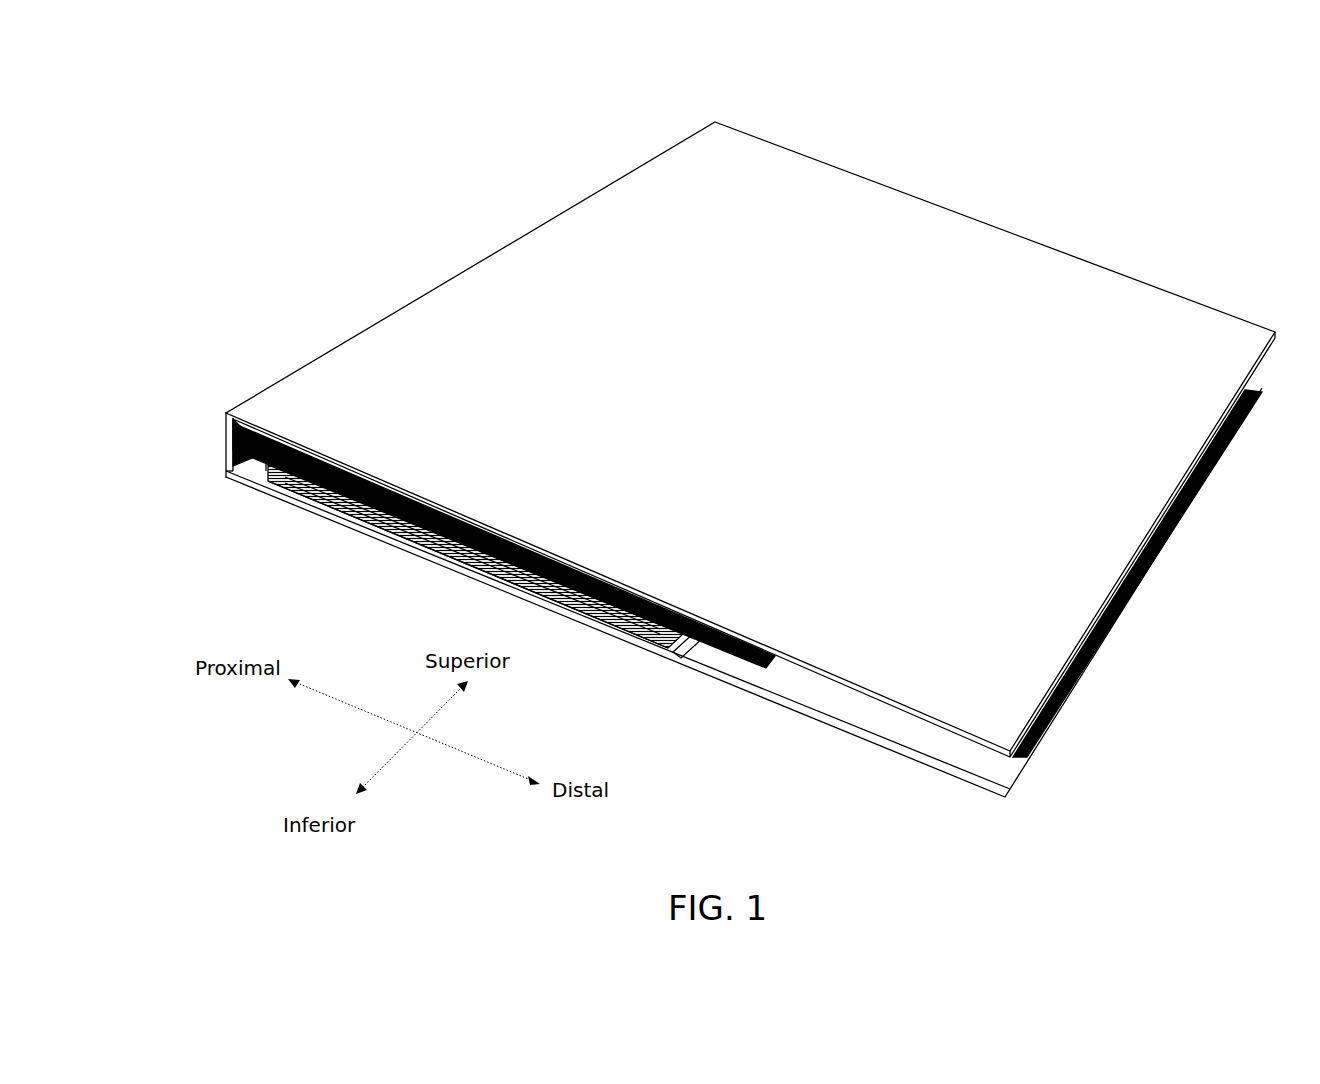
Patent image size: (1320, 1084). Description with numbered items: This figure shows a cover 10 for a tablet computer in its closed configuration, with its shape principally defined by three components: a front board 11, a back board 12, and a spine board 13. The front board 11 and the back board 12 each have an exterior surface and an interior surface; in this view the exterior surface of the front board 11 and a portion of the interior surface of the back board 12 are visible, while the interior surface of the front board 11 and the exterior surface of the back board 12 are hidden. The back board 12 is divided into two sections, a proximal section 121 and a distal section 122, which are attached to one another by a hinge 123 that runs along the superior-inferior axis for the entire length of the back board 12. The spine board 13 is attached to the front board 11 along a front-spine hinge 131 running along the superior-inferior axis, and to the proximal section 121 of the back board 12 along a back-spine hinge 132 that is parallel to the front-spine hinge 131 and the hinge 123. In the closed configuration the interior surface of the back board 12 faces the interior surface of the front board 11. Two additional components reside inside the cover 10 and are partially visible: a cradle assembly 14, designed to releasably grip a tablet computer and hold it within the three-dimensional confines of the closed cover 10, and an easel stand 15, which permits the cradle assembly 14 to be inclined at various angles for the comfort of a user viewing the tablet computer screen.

The cover 10 is at (1161, 188).
The front board 11 is at (807, 412).
The back board 12 is at (475, 579).
The proximal section 121 is at (399, 551).
The distal section 122 is at (840, 733).
The hinge 123 is at (672, 657).
The spine board 13 is at (225, 441).
The front-spine hinge 131 is at (231, 411).
The back-spine hinge 132 is at (228, 470).
The cradle assembly 14 is at (432, 503).
The easel stand 15 is at (313, 513).